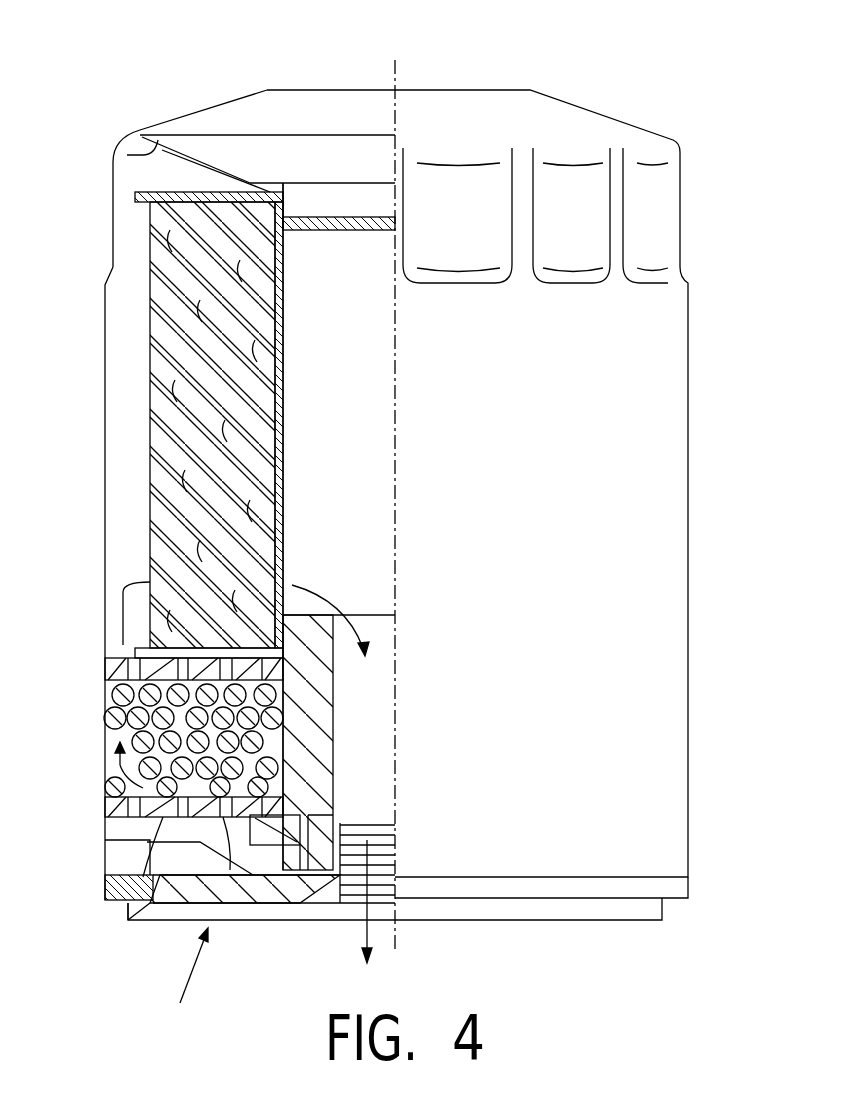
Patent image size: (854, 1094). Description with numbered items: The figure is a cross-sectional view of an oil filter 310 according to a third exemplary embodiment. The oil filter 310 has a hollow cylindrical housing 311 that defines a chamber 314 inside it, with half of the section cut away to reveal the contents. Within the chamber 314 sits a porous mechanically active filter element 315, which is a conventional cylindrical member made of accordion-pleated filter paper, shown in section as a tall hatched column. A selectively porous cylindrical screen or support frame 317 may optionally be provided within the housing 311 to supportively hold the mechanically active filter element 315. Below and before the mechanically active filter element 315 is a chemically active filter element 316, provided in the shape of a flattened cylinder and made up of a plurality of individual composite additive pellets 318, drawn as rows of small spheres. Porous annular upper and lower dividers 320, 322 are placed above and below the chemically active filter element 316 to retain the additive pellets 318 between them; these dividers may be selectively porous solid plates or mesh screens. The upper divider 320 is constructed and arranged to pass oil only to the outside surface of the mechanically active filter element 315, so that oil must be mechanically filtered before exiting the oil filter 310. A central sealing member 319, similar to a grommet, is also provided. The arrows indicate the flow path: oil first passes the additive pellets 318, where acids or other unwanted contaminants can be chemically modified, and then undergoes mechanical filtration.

The oil filter 310 is at (752, 95).
The housing 311 is at (492, 500).
The chamber 314 is at (110, 414).
The mechanically active filter element 315 is at (150, 328).
The chemically active filter element 316 is at (107, 703).
The screen or support frame 317 is at (162, 192).
The additive pellets 318 is at (112, 777).
The central sealing member 319 is at (337, 660).
The upper divider 320 is at (125, 657).
The lower divider 322 is at (130, 903).